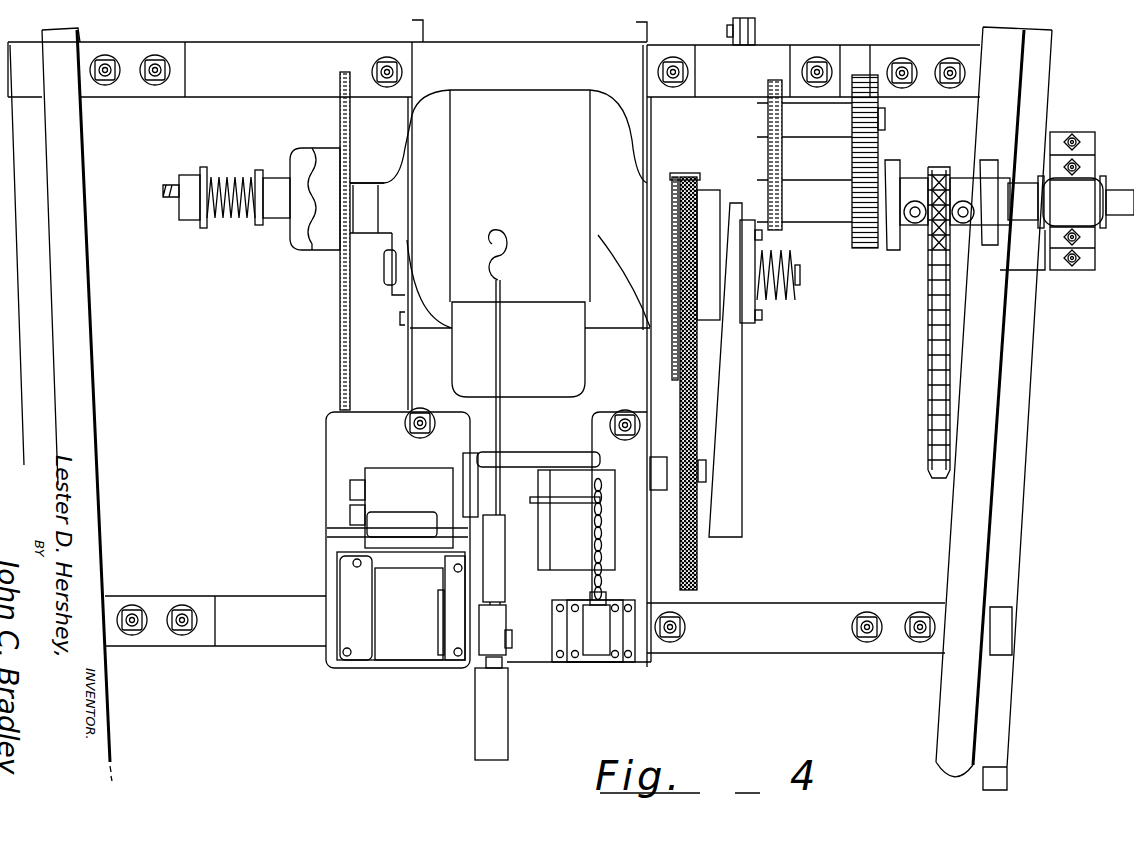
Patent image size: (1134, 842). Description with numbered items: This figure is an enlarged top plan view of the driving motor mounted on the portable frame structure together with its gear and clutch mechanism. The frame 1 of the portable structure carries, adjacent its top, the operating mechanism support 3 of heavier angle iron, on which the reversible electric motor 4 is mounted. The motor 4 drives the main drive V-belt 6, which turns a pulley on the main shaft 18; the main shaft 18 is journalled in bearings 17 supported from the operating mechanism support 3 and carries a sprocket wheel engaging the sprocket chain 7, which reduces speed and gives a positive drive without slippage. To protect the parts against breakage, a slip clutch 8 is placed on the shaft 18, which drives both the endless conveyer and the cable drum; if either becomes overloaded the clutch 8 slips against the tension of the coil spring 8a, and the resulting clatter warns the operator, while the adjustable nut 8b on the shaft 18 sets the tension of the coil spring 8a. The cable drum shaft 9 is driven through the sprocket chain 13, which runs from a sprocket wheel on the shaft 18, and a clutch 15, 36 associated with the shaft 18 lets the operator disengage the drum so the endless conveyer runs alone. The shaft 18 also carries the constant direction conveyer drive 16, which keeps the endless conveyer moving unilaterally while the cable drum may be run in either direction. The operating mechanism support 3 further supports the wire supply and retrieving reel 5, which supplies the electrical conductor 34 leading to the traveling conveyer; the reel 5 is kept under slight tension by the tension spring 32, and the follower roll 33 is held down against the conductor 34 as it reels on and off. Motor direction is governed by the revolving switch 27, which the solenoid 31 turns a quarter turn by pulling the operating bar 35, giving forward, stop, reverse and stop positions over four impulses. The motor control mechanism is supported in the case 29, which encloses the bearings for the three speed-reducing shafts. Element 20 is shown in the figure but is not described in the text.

The frame 1 is at (78, 365).
The operating mechanism support 3 is at (255, 88).
The reversible electric motor 4 is at (522, 110).
The wire supply and retrieving reel 5 is at (487, 716).
The main drive V-belt 6 is at (697, 437).
The sprocket chain 7 is at (340, 388).
The slip clutch 8 is at (318, 252).
The coil spring 8a is at (234, 217).
The adjustable nut 8b is at (180, 222).
The cable drum shaft 9 is at (386, 266).
The sprocket chain 13 is at (668, 333).
The clutch 15 is at (752, 323).
The constant direction conveyer drive 16 is at (920, 252).
The bearings 17 is at (1030, 256).
The main shaft 18 is at (273, 215).
The stop lug 20 is at (706, 473).
The revolving switch 27 is at (404, 470).
The case 29 is at (400, 348).
The solenoid 31 is at (598, 665).
The tension spring 32 is at (400, 668).
The follower roll 33 is at (490, 668).
The electrical conductor 34 is at (502, 364).
The operating bar 35 is at (575, 462).
The clutch 36 is at (745, 518).